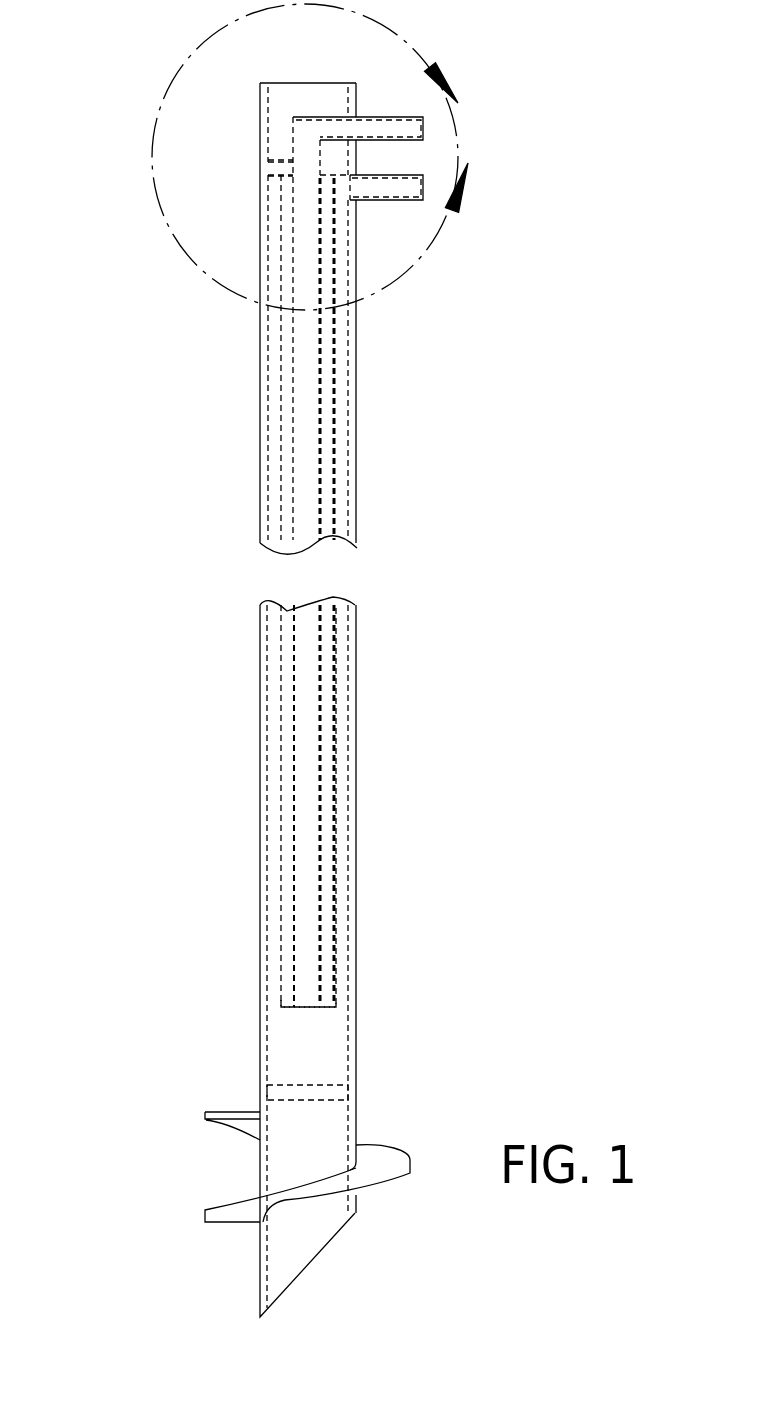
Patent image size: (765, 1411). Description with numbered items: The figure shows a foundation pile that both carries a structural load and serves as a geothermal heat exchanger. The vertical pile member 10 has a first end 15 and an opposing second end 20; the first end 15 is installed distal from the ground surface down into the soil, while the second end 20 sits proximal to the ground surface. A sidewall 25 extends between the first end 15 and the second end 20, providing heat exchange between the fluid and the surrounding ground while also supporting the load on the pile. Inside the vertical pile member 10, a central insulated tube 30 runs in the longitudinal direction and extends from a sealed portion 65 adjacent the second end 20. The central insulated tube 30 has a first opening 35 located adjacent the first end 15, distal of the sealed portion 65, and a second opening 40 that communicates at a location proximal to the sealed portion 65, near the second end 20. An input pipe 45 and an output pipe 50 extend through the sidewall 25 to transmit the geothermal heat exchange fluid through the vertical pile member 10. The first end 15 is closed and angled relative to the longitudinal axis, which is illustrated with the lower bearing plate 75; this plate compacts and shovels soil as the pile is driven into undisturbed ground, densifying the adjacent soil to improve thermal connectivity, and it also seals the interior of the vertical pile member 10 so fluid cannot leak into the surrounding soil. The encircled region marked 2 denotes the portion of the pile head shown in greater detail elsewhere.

The vertical pile member 10 is at (279, 660).
The first end 15 is at (270, 1203).
The second end 20 is at (279, 272).
The sidewall 25 is at (334, 700).
The central insulated tube 30 is at (341, 806).
The first opening 35 is at (353, 1019).
The second opening 40 is at (247, 328).
The input pipe 45 is at (397, 83).
The output pipe 50 is at (421, 225).
The sealed portion 65 is at (218, 106).
The lower bearing plate 75 is at (347, 1108).
The section view indicator 2 is at (452, 138).